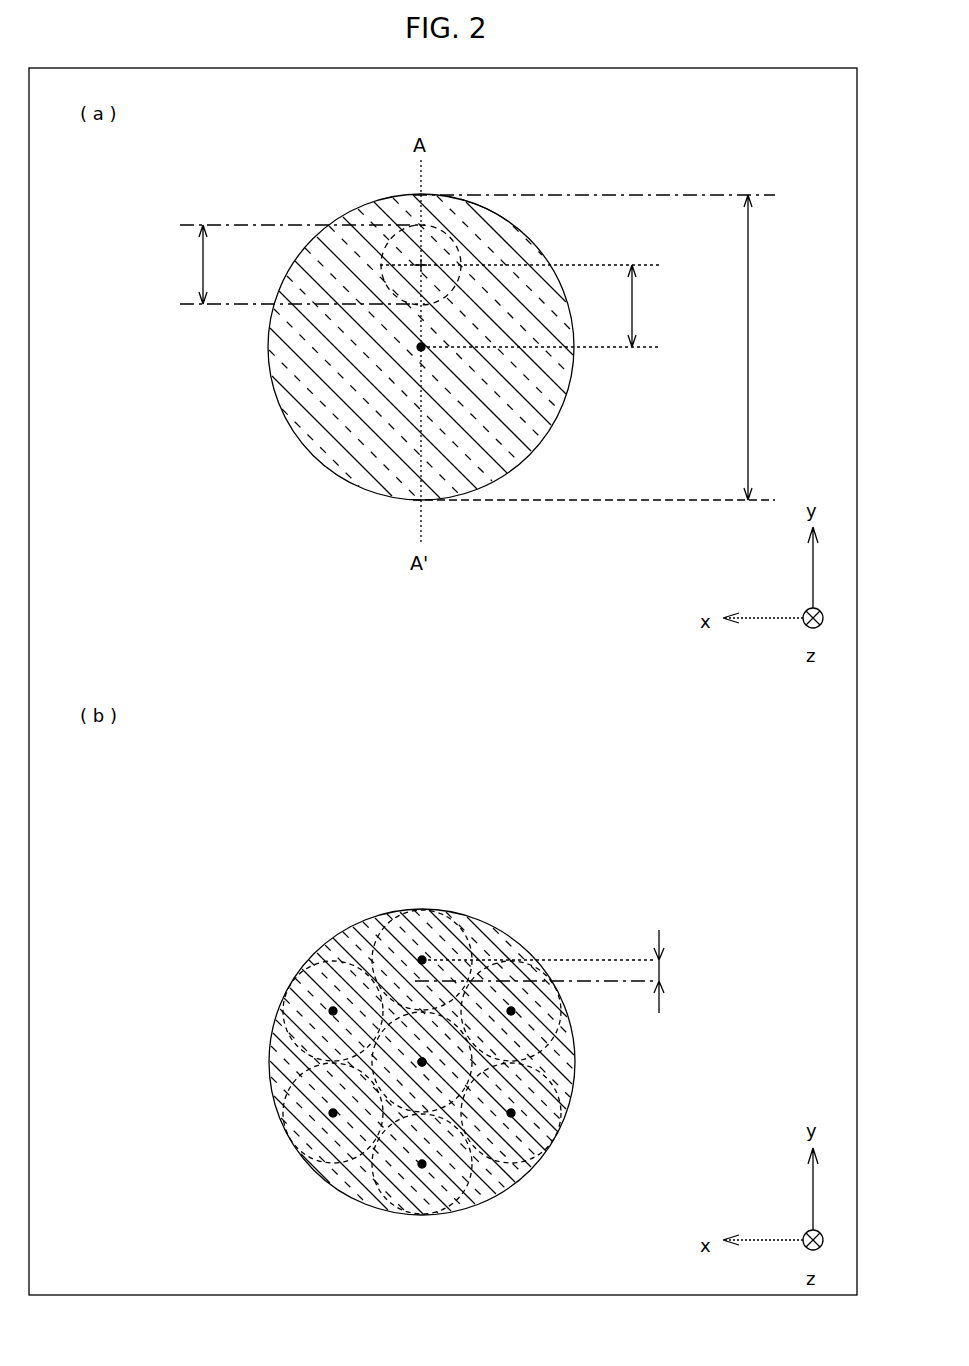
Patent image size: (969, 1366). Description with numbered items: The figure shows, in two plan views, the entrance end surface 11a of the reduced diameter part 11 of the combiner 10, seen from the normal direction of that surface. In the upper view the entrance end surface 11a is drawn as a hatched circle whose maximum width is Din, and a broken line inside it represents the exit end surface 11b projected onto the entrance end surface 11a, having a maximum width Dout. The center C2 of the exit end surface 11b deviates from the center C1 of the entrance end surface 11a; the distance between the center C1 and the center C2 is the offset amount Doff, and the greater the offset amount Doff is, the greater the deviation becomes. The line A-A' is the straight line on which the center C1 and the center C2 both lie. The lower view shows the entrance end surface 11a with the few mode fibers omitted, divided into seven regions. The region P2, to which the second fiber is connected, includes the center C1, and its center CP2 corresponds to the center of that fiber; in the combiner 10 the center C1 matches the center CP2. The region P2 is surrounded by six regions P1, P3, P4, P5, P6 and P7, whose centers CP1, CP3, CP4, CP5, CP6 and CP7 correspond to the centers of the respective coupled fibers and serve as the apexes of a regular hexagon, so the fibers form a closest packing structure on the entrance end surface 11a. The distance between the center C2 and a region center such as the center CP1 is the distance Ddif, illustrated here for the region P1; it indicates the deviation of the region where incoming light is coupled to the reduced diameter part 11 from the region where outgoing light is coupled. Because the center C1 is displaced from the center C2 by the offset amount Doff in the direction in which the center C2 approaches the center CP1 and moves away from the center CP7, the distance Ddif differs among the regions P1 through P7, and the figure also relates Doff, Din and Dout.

The combiner 10 is at (642, 822).
The reduced diameter part 11 is at (372, 202).
The entrance end surface 11a is at (357, 253).
The exit end surface 11b is at (473, 202).
The center of the entrance end surface C1 is at (421, 347).
The center of the exit end surface C2 is at (268, 338).
The center of region P1 CP1 is at (422, 960).
The center of region P2 CP2 is at (422, 1062).
The center of region P3 CP3 is at (422, 1164).
The center of region P4 CP4 is at (333, 1011).
The center of region P5 CP5 is at (511, 1011).
The center of region P6 CP6 is at (333, 1113).
The center of region P7 CP7 is at (511, 1113).
The region P1 is at (472, 940).
The region P2 is at (472, 1066).
The region P3 is at (468, 1195).
The region P4 is at (320, 965).
The region P5 is at (560, 1012).
The region P6 is at (300, 1085).
The region P7 is at (561, 1105).
The maximum width of the entrance end surface Din is at (769, 347).
The maximum width of the exit end surface Dout is at (167, 264).
The offset amount Doff is at (658, 306).
The distance Ddif is at (682, 971).